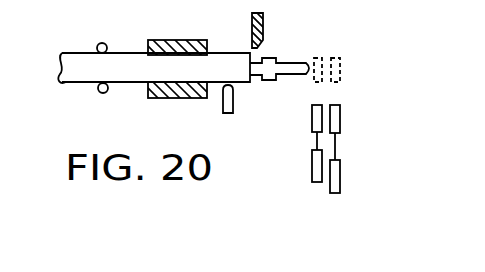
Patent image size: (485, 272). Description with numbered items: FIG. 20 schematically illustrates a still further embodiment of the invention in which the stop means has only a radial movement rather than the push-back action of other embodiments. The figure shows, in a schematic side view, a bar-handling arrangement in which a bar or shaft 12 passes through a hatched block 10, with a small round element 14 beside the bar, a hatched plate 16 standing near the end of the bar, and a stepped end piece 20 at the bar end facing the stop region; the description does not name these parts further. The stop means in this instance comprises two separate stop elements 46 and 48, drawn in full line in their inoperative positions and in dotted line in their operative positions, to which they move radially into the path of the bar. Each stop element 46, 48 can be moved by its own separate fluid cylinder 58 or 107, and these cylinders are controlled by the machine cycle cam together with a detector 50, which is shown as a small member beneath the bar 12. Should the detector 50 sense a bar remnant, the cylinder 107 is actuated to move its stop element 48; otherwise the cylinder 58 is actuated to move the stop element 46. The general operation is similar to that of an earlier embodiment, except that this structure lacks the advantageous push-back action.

The bearing block 10 is at (165, 40).
The shaft 12 is at (70, 84).
The pin 14 is at (101, 93).
The plate 16 is at (264, 21).
The coupling pin assembly 20 is at (296, 62).
The stop element 46 is at (312, 121).
The stop element 48 is at (340, 118).
The detector 50 is at (224, 107).
The fluid cylinder 58 is at (312, 178).
The fluid cylinder 107 is at (340, 186).